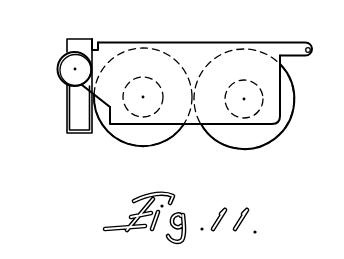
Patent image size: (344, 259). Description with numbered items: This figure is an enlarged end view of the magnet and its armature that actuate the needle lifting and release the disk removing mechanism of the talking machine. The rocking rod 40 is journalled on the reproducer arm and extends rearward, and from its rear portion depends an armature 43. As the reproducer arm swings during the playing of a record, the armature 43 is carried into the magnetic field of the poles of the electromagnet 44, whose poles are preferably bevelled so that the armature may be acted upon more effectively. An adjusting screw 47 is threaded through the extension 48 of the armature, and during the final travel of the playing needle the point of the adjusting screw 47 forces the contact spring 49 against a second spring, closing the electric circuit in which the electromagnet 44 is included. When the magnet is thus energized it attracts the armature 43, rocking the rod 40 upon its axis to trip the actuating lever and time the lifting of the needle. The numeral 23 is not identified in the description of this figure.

The housing 23 is at (190, 112).
The rocking rod 40 is at (243, 43).
The armature 43 is at (270, 83).
The electromagnet 44 is at (293, 110).
The adjusting screw 47 is at (57, 68).
The extension of the armature 48 is at (82, 84).
The contact spring 49 is at (67, 124).